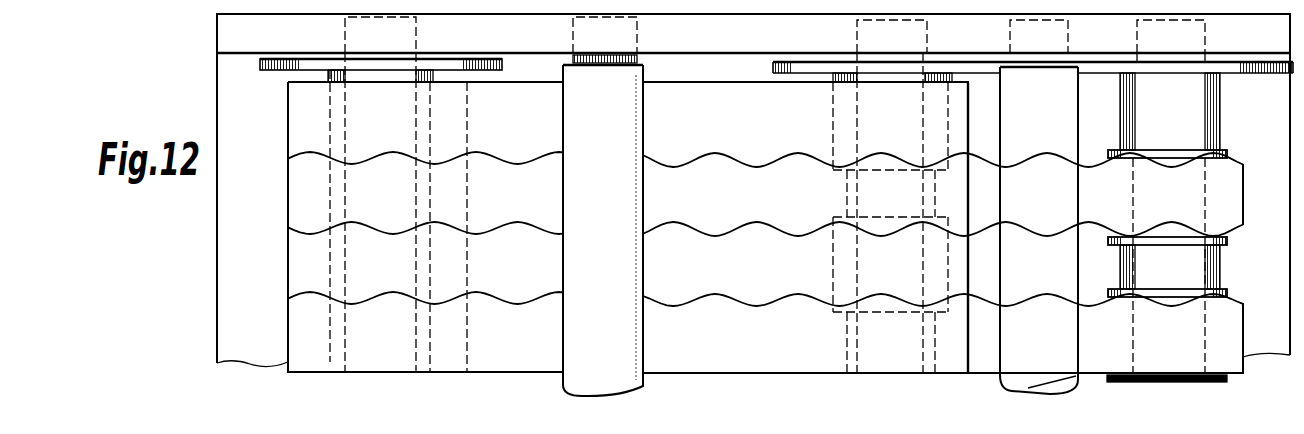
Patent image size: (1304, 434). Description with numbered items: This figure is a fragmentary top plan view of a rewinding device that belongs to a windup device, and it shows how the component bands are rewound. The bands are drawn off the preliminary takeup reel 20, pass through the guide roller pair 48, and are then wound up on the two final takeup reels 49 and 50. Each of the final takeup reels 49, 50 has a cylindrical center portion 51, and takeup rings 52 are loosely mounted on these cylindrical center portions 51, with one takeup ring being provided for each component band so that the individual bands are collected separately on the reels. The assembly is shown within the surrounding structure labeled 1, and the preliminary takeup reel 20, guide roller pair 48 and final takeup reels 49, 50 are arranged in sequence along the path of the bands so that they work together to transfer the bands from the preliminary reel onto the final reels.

The housing / frame 1 is at (490, 94).
The preliminary takeup reel 20 is at (278, 71).
The guide roller pair 48 is at (582, 331).
The final takeup reel 49 is at (793, 63).
The final takeup reel 50 is at (1220, 68).
The cylindrical center portion 51 is at (868, 192).
The takeup ring 52 is at (843, 127).